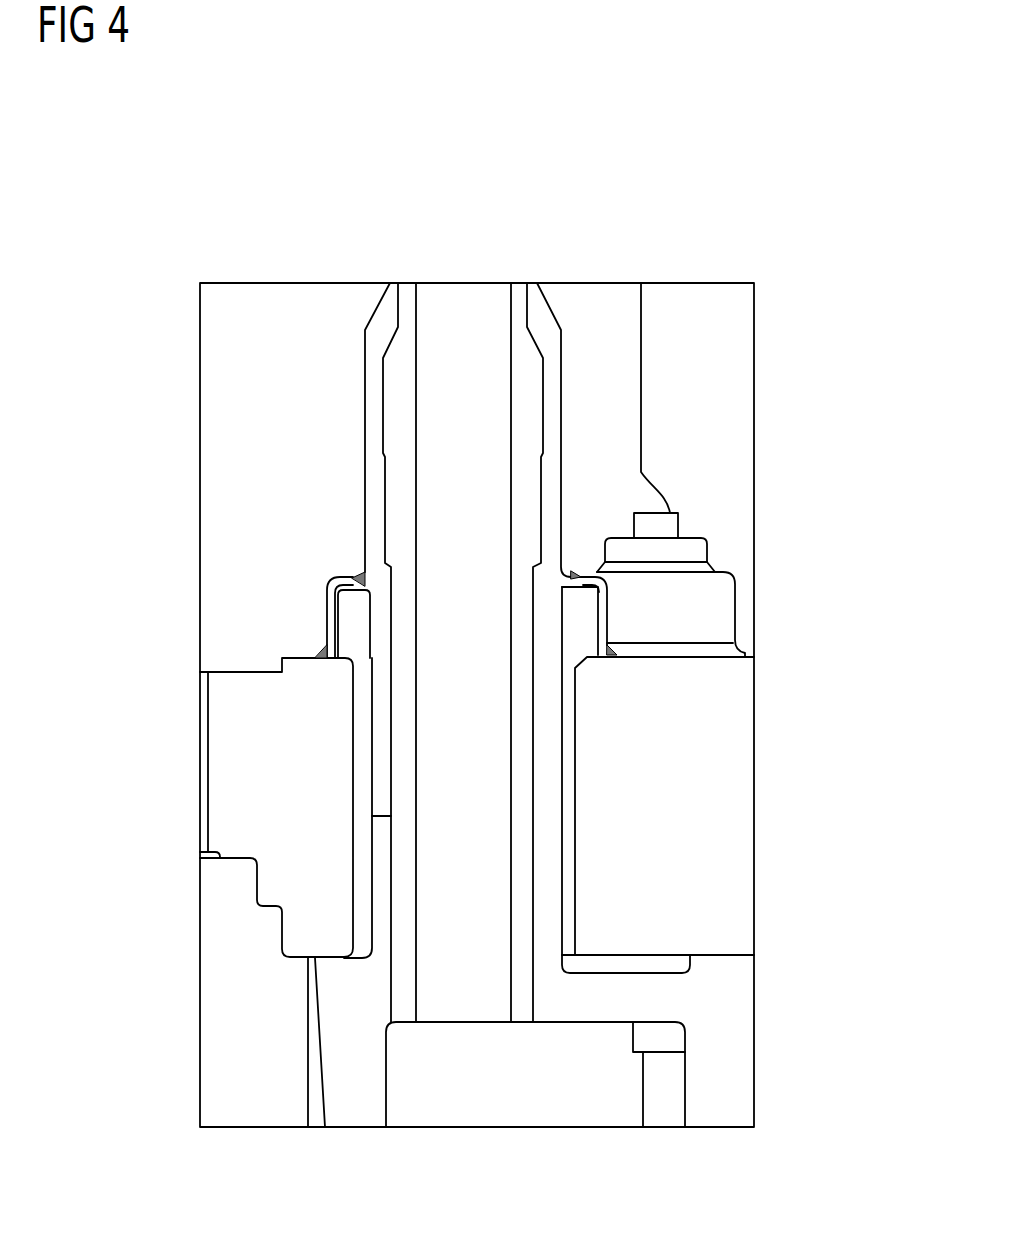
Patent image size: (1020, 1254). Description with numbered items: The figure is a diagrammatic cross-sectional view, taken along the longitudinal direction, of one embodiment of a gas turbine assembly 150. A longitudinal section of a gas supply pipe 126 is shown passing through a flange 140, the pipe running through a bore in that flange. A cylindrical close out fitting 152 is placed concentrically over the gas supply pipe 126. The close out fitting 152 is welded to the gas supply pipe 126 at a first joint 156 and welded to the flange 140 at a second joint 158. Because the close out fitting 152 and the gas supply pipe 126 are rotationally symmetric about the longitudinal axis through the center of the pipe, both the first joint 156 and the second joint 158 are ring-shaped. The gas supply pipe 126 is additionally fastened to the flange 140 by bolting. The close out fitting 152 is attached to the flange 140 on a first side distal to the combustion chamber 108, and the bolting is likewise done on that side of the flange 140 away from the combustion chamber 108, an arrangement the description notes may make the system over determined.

The gas turbine assembly 150 is at (280, 208).
The gas supply pipe 126 is at (365, 430).
The first joint 156 is at (360, 575).
The second joint 158 is at (322, 655).
The close out fitting 152 is at (607, 617).
The flange 140 is at (735, 717).
The combustion chamber 108 is at (528, 1098).